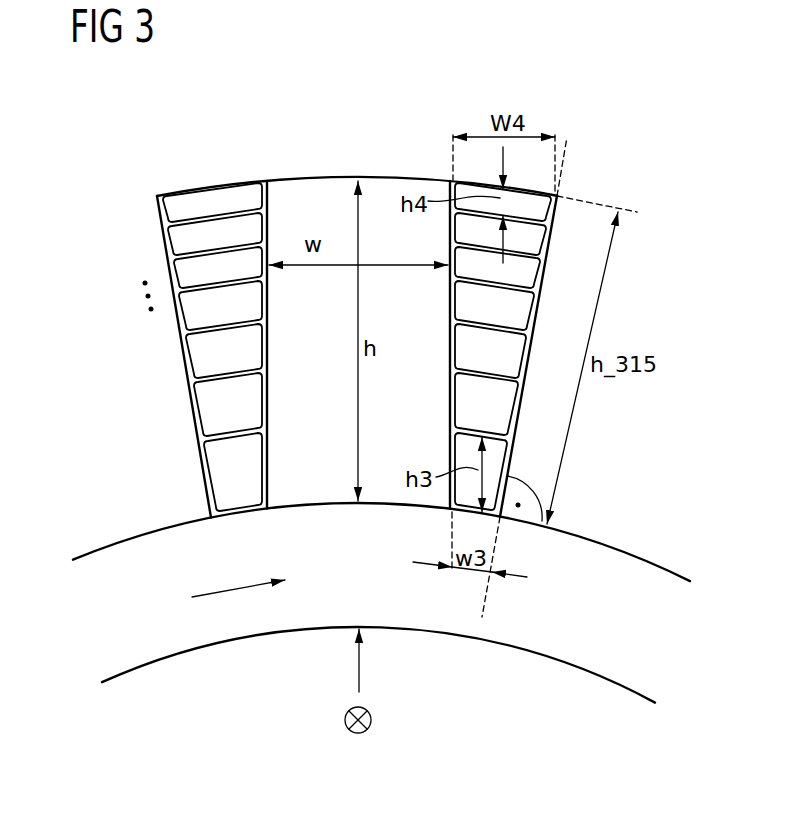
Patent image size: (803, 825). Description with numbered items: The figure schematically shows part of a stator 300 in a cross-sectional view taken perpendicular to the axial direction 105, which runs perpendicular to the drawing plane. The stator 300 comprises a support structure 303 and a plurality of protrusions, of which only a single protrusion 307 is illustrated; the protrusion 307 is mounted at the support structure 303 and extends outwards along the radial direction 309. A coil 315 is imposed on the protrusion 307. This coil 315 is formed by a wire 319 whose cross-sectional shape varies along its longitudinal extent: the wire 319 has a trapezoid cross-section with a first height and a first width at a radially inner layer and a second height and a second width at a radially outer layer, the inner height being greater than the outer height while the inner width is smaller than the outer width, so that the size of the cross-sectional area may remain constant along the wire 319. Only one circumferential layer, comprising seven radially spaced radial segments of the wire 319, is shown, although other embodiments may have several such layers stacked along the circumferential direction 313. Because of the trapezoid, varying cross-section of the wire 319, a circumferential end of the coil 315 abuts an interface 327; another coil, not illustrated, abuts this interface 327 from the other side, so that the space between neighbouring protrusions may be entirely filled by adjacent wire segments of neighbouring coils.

The stator 300 is at (606, 98).
The support structure 303 is at (607, 678).
The axial direction 105 is at (372, 720).
The protrusion 307 is at (332, 442).
The radial direction 309 is at (362, 668).
The circumferential direction 313 is at (228, 588).
The coil 315 is at (168, 180).
The wire 319 is at (152, 222).
The interface 327 is at (564, 157).